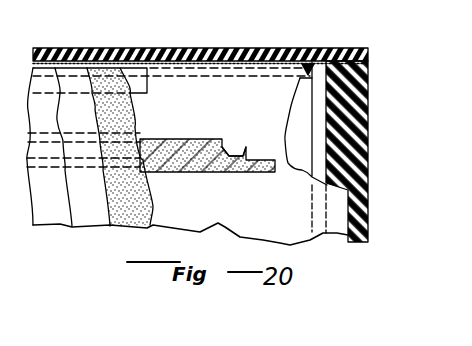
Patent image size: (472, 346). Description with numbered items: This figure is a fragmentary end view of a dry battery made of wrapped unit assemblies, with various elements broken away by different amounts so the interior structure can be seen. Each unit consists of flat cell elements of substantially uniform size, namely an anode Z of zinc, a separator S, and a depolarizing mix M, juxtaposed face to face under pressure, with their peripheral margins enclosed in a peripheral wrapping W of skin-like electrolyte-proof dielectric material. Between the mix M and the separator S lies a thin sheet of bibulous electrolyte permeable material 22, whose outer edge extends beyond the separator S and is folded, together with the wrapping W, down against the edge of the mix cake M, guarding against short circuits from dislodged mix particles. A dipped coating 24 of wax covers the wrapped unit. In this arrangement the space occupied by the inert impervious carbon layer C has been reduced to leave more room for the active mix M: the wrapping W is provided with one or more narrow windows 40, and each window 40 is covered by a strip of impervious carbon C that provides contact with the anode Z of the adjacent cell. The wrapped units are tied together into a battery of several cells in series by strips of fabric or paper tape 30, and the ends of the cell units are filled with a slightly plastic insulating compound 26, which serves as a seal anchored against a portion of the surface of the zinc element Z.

The electrolyte permeable material 22 is at (187, 156).
The dipped coating 24 is at (248, 50).
The insulating compound 26 is at (352, 168).
The tape 30 is at (323, 48).
The window 40 is at (240, 147).
The peripheral wrapping W is at (128, 48).
The separator S is at (320, 99).
The anode Z is at (302, 131).
The carbon C is at (175, 153).
The mix M is at (133, 205).